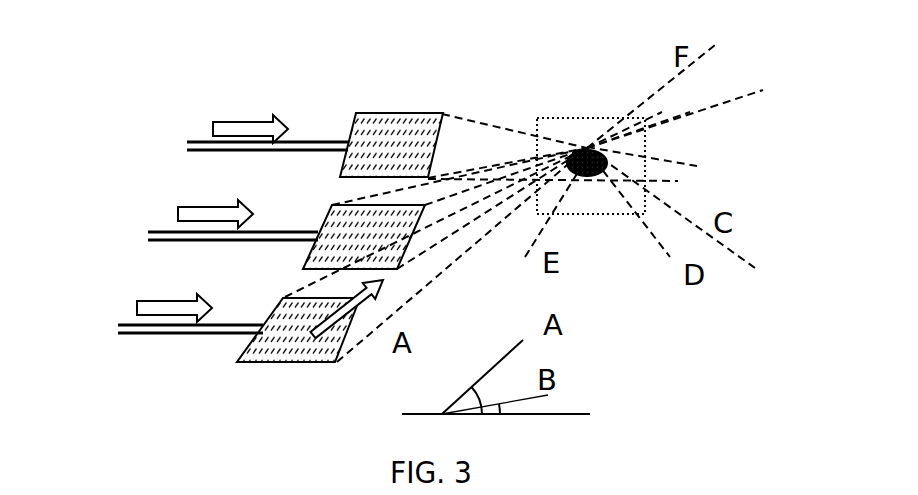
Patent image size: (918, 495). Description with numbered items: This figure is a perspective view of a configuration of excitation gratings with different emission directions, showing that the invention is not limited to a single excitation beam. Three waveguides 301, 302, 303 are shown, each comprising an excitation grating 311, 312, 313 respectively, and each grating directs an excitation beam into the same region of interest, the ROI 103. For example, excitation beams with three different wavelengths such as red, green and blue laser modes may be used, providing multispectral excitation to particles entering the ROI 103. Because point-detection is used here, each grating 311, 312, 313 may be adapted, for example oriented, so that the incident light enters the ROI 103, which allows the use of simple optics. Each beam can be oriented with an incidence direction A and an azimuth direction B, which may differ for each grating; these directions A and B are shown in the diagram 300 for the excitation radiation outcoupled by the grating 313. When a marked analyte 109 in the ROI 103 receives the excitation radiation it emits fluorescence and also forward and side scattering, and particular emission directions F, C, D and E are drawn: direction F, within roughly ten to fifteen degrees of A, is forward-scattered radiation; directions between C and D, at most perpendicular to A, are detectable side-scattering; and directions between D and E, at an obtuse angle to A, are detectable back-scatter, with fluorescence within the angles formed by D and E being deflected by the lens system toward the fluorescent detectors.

The diagram 300 is at (626, 375).
The waveguide 301 is at (198, 142).
The waveguide 302 is at (153, 231).
The waveguide 303 is at (123, 325).
The excitation grating 311 is at (352, 125).
The excitation grating 312 is at (326, 214).
The excitation grating 313 is at (267, 325).
The ROI 103 is at (593, 118).
The analyte 109 is at (590, 176).